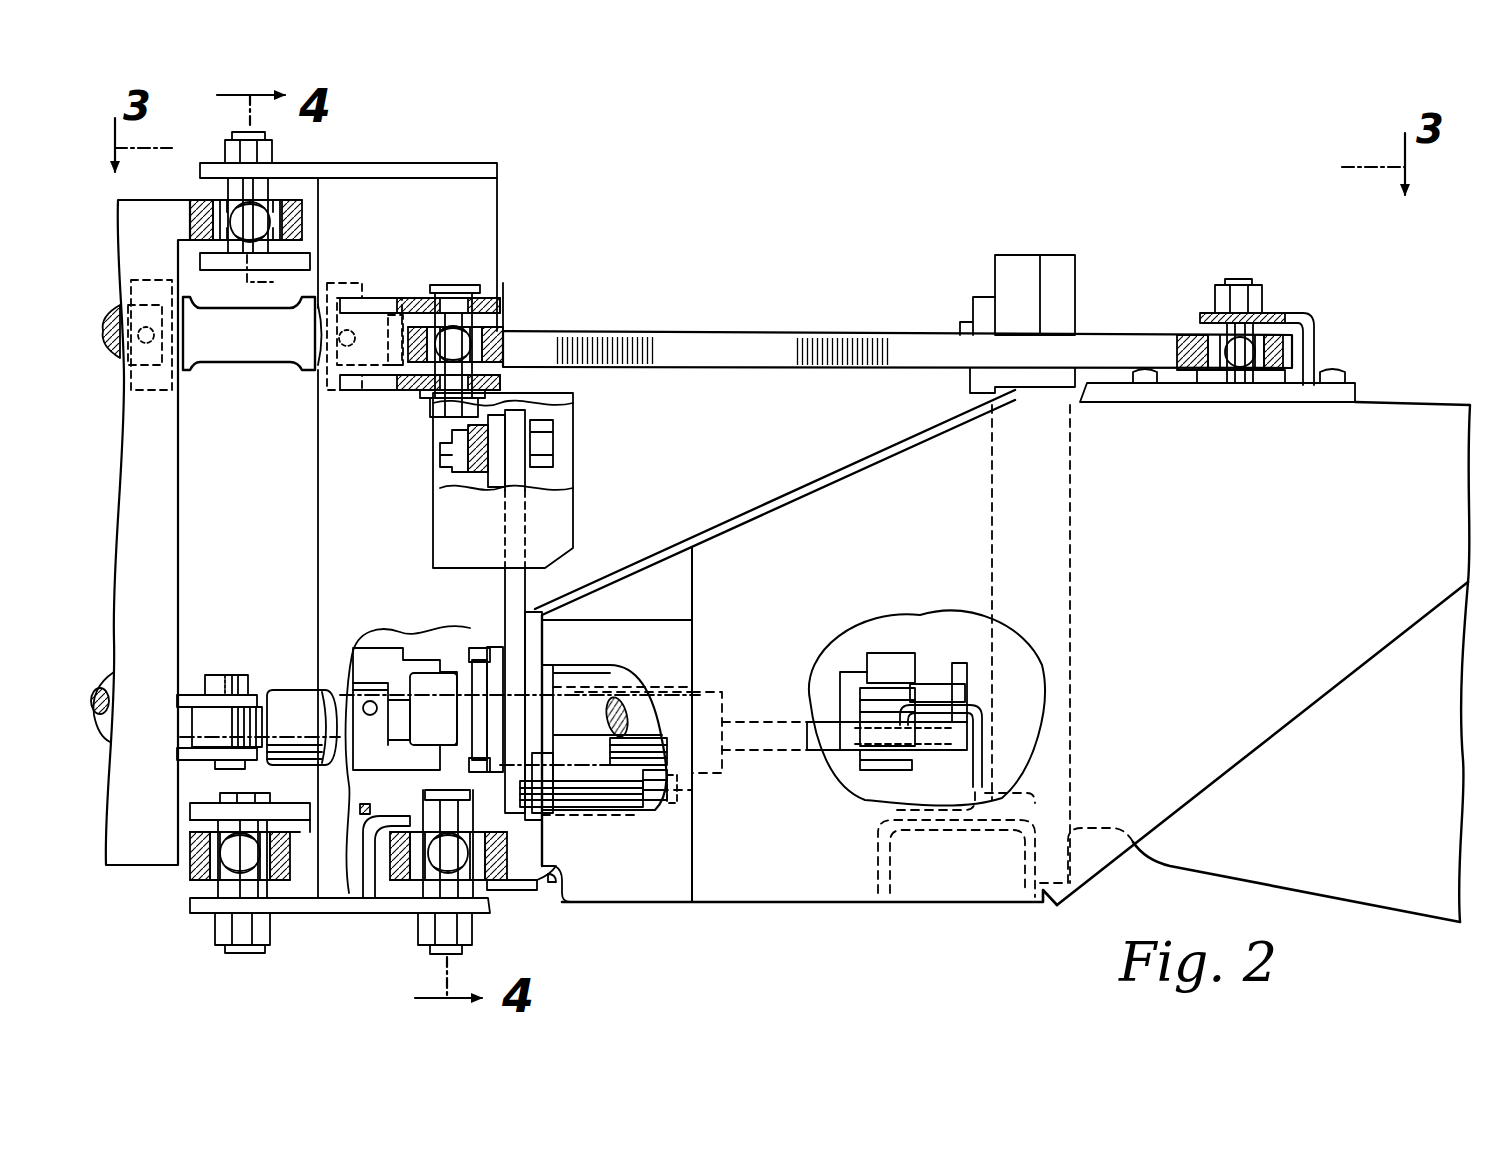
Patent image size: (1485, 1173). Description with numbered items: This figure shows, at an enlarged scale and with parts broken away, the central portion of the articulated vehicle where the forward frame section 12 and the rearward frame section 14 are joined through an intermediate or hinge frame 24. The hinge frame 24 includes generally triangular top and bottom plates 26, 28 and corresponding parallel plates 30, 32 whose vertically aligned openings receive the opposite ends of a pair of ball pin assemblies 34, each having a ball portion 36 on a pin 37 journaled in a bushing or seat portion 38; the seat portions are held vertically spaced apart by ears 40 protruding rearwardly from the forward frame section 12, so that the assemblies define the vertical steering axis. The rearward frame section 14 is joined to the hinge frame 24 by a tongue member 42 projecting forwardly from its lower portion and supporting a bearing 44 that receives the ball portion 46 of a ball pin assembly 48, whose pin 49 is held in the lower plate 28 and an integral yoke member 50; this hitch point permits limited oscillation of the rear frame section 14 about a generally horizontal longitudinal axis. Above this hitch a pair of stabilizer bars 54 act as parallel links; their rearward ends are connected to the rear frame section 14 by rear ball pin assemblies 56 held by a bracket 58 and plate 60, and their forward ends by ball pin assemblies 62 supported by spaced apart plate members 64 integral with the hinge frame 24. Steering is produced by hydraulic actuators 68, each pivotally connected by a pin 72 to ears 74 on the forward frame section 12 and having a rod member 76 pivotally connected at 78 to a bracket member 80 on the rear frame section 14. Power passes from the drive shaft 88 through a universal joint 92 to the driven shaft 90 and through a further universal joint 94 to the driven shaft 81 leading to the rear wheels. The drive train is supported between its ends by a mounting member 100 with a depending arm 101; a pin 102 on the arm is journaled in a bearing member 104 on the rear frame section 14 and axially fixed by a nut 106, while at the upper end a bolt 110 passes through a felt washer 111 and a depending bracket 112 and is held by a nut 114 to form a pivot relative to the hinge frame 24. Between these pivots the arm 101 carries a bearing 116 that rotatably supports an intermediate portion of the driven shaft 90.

The forward frame section 12 is at (110, 868).
The rearward frame section 14 is at (785, 907).
The intermediate or hinge frame 24 is at (440, 158).
The top plate 26 is at (498, 170).
The bottom plate 28 is at (323, 913).
The parallel plate 30 is at (300, 265).
The parallel plate 32 is at (195, 812).
The ball pin assemblies 34 is at (280, 188).
The ball portion 36 is at (237, 215).
The pin 37 is at (242, 133).
The bushing or seat portion 38 is at (213, 230).
The ears 40 is at (300, 222).
The tongue member 42 is at (548, 897).
The bearing 44 is at (520, 891).
The ball portion 46 is at (476, 900).
The ball pin assembly 48 is at (416, 931).
The pin 49 is at (440, 954).
The yoke member 50 is at (388, 816).
The stabilizer bars 54 is at (742, 340).
The rear ball pin assemblies 56 is at (1222, 287).
The bracket 58 is at (1300, 313).
The plate 60 is at (1282, 395).
The ball pin assemblies 62 is at (474, 284).
The plate members 64 is at (403, 298).
The hydraulic actuators 68 is at (290, 710).
The pin 72 is at (225, 675).
The ears 74 is at (178, 722).
The rod member 76 is at (760, 694).
The pivot connection 78 is at (923, 685).
The bracket member 80 is at (983, 723).
The driven shaft 81 is at (963, 697).
The drive shaft 88 is at (105, 690).
The driven power transmitting shaft 90 is at (590, 690).
The universal joint 92 is at (380, 645).
The universal joint 94 is at (888, 663).
The mounting member 100 is at (536, 597).
The arm 101 is at (517, 630).
The pin 102 is at (677, 800).
The bearing member 104 is at (622, 807).
The nut 106 is at (660, 800).
The bolt 110 is at (555, 445).
The felt washer 111 is at (497, 462).
The depending bracket 112 is at (472, 470).
The nut 114 is at (455, 455).
The bearing 116 is at (472, 673).